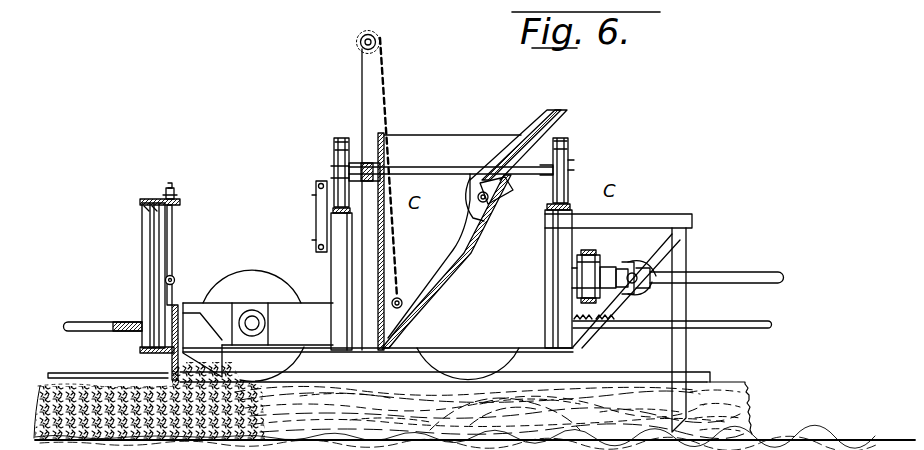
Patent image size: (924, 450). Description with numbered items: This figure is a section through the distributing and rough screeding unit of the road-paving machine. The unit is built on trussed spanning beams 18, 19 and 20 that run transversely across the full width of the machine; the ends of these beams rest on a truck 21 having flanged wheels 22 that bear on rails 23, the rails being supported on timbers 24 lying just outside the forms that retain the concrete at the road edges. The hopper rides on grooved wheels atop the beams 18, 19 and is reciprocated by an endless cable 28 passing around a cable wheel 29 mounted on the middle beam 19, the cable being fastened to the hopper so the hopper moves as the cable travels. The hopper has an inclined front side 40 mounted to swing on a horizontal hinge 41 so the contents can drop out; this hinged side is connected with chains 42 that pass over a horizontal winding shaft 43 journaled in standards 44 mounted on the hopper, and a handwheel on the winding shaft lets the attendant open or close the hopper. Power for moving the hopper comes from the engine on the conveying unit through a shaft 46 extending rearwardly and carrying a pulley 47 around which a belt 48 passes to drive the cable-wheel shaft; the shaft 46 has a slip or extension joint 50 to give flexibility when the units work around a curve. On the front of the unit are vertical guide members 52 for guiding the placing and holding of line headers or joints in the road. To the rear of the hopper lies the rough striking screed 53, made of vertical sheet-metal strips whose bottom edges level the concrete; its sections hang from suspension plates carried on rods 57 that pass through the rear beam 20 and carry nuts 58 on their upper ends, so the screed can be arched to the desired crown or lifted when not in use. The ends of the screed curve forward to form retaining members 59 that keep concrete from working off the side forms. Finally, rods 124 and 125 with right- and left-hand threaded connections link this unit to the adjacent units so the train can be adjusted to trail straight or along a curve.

The trussed spanning beam 18 is at (553, 257).
The middle trussed spanning beam 19 is at (340, 273).
The rear trussed spanning beam 20 is at (143, 275).
The truck 21 is at (292, 303).
The flanged wheel 22 is at (288, 360).
The rail 23 is at (388, 376).
The timber 24 is at (592, 397).
The endless cable 28 is at (320, 182).
The cable wheel 29 is at (316, 198).
The inclined front side 40 is at (445, 252).
The horizontal hinge 41 is at (489, 207).
The chain 42 is at (399, 236).
The horizontal winding shaft 43 is at (359, 48).
The standard 44 is at (362, 102).
The shaft 46 is at (700, 280).
The pulley 47 is at (609, 270).
The belt 48 is at (594, 252).
The slip or extension joint 50 is at (640, 271).
The vertical guide member 52 is at (678, 356).
The rough striking screed 53 is at (178, 318).
The rod 57 is at (173, 251).
The nut 58 is at (176, 199).
The retaining member 59 is at (203, 345).
The rod 124 is at (742, 323).
The rod 125 is at (97, 322).